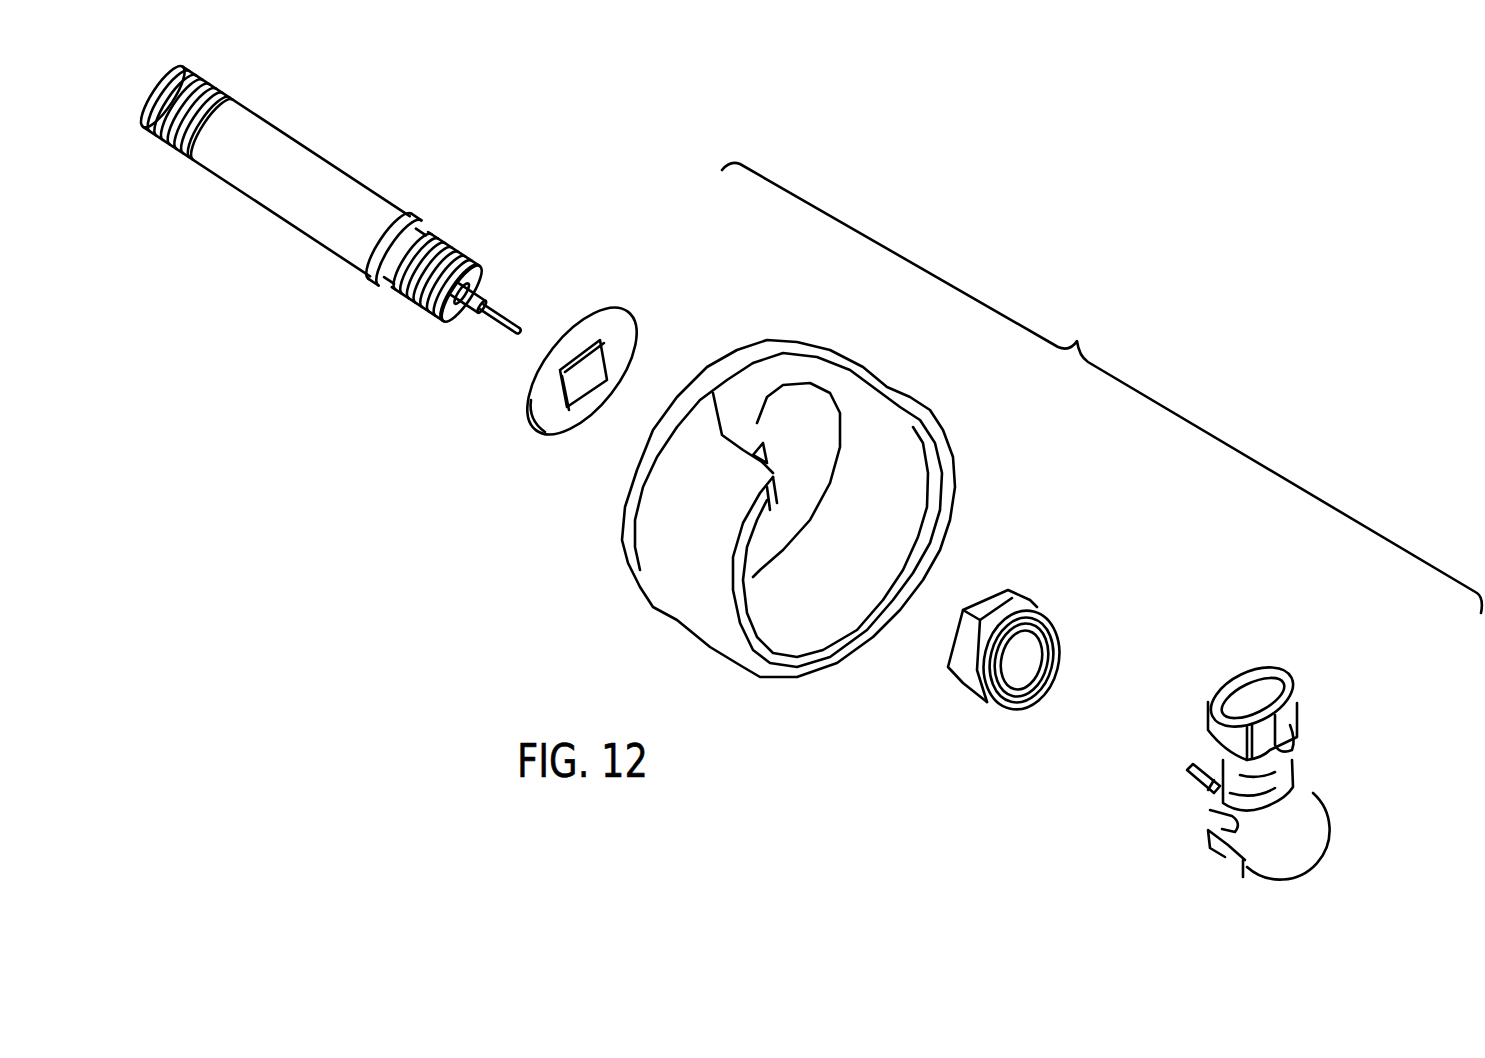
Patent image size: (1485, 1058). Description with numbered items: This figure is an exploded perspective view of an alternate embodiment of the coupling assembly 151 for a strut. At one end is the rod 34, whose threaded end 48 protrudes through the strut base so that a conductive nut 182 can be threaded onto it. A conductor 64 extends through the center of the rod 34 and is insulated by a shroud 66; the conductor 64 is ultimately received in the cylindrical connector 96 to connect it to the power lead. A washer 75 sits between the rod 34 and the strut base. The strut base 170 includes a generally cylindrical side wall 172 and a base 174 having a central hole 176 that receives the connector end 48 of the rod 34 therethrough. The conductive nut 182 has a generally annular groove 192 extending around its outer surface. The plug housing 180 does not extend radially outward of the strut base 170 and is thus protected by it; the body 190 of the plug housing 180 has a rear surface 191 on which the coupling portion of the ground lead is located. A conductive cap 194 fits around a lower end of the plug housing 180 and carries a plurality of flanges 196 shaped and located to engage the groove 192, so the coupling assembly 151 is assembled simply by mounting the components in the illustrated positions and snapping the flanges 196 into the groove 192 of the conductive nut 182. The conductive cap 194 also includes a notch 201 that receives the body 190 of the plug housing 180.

The rod 34 is at (277, 137).
The threaded end 48 is at (443, 250).
The conductor 64 is at (505, 315).
The shroud 66 is at (472, 316).
The washer 75 is at (553, 427).
The coupling assembly 151 is at (1102, 388).
The strut base 170 is at (687, 620).
The side wall 172 is at (840, 367).
The base 174 is at (760, 427).
The central hole 176 is at (767, 453).
The conductive nut 182 is at (993, 597).
The annular groove 192 is at (983, 673).
The plug housing 180 is at (1297, 773).
The body 190 is at (1220, 763).
The rear surface 191 is at (1303, 797).
The conductive cap 194 is at (1290, 853).
The cylindrical connector 96 is at (1188, 770).
The flanges 196 is at (1217, 797).
The notch 201 is at (1247, 857).